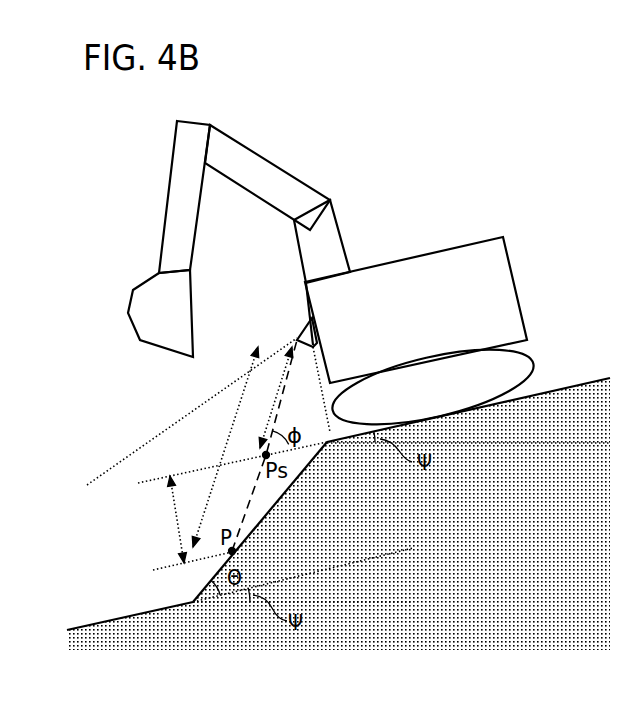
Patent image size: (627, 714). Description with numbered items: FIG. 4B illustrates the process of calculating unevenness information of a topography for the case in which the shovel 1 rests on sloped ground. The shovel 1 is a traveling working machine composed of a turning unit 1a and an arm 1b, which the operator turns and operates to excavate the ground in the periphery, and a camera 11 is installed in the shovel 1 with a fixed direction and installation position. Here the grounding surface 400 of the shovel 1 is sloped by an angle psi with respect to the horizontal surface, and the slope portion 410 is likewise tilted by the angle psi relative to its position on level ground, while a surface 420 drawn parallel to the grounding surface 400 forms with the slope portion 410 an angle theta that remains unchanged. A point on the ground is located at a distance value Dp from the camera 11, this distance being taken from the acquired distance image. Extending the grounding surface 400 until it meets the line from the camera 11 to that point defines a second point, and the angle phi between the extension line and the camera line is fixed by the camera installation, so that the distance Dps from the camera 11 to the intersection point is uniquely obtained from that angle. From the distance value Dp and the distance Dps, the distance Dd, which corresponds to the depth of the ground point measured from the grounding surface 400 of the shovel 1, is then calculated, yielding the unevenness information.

The shovel 1 is at (341, 280).
The turning unit 1a is at (507, 292).
The arm 1b is at (258, 160).
The camera 11 is at (300, 325).
The grounding surface 400 is at (560, 388).
The slope portion 410 is at (275, 507).
The surface 420 is at (82, 628).
The distance value Dp is at (225, 447).
The distance Dps is at (270, 418).
The distance Dd is at (164, 519).